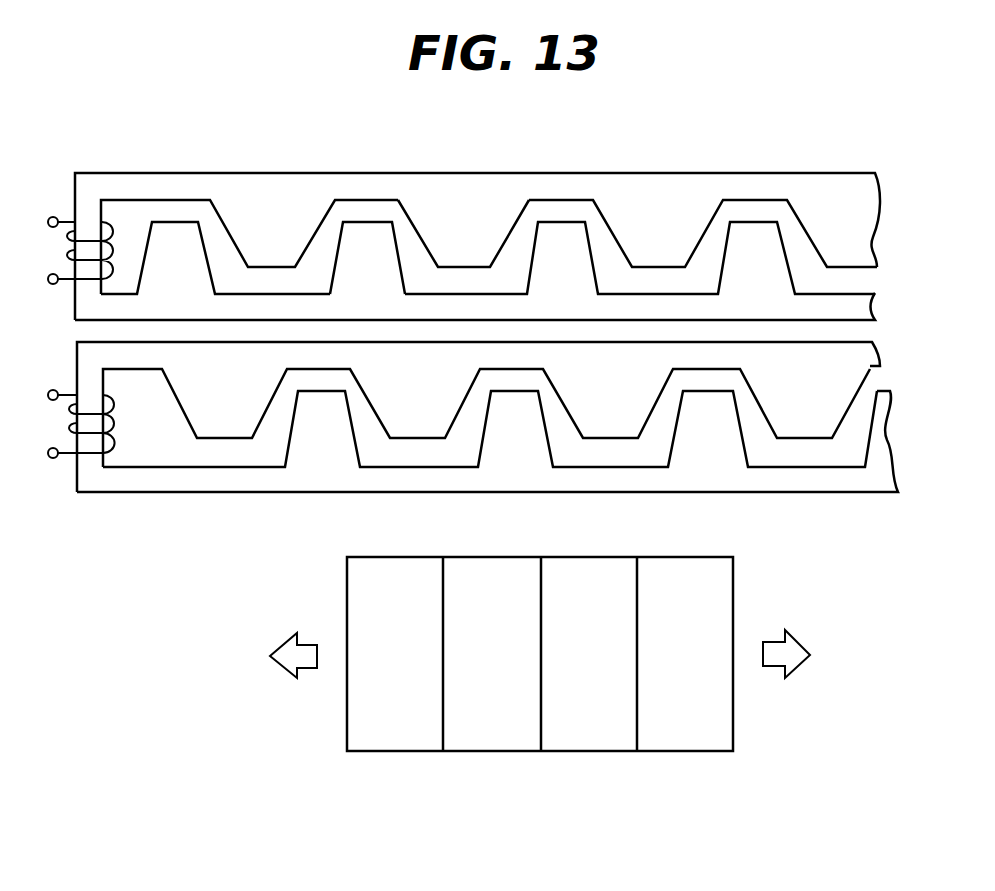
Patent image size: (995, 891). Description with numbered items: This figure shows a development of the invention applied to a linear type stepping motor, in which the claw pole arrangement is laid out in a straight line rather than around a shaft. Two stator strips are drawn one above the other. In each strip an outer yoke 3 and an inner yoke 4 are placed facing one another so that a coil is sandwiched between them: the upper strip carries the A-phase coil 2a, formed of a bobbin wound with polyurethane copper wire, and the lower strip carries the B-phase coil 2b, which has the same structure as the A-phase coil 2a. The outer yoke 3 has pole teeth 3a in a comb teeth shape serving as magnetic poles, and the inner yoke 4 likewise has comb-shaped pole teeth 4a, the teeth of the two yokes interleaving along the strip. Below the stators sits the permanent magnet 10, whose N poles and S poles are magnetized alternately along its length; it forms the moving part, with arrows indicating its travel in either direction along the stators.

The A-phase coil 2a is at (91, 238).
The B-phase coil 2b is at (92, 445).
The outer yoke 3 is at (202, 187).
The pole teeth 3a is at (447, 227).
The inner yoke 4 is at (263, 308).
The pole teeth 4a is at (353, 235).
The permanent magnet 10 is at (332, 713).